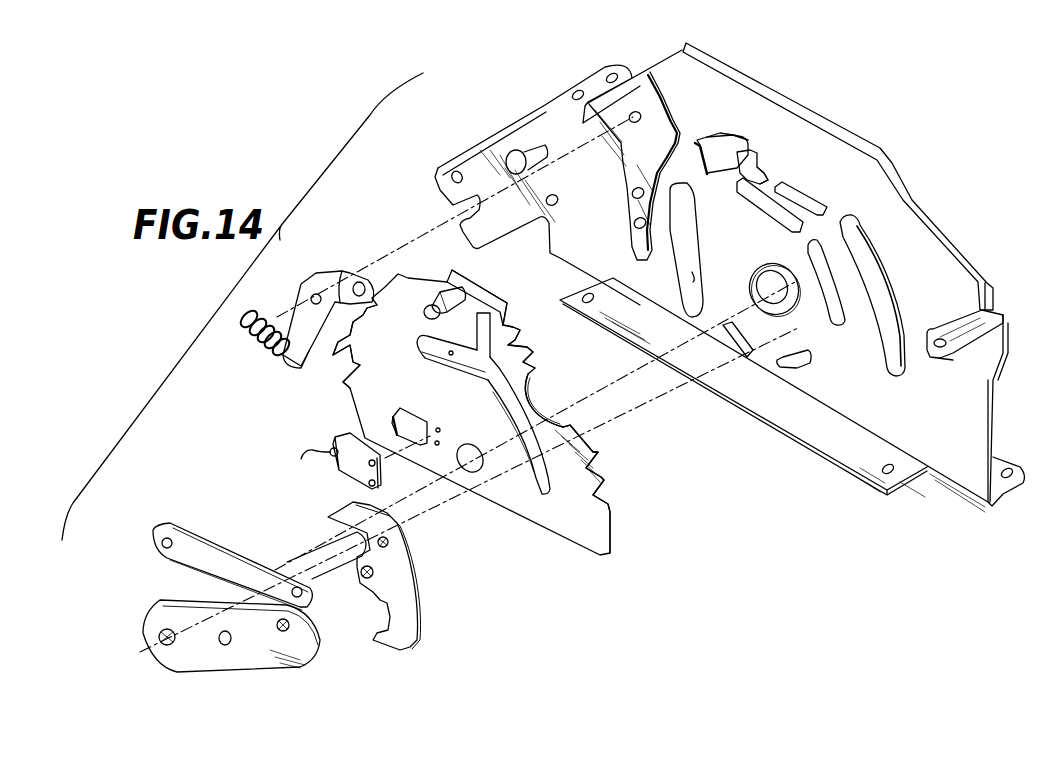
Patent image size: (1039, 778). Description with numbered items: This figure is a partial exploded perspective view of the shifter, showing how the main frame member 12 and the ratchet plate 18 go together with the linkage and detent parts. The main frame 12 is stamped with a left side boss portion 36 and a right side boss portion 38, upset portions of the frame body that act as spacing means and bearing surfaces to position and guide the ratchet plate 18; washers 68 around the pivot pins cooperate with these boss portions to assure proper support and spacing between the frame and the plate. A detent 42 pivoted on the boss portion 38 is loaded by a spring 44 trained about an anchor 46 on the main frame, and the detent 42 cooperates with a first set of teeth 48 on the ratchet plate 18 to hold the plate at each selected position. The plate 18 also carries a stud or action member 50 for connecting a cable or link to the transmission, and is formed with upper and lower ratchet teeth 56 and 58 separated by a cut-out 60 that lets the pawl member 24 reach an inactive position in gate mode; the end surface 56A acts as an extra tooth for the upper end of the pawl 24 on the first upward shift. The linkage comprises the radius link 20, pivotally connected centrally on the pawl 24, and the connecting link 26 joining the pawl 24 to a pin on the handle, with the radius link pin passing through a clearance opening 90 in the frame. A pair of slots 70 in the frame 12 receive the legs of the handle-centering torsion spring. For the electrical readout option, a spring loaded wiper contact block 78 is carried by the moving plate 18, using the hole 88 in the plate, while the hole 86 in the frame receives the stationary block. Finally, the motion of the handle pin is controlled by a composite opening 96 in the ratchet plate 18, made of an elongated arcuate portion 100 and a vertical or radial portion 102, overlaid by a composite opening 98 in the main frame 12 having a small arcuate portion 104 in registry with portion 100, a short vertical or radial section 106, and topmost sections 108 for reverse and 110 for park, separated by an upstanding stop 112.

The main frame member 12 is at (802, 124).
The ratchet plate 18 is at (567, 517).
The radius link 20 is at (267, 662).
The pawl member 24 is at (407, 617).
The connecting link 26 is at (177, 558).
The left side boss portion 36 is at (880, 287).
The right side boss portion 38 is at (647, 88).
The detent 42 is at (327, 282).
The spring 44 is at (268, 338).
The anchor 46 is at (506, 152).
The first set of teeth 48 is at (333, 357).
The stud or action member 50 is at (445, 283).
The upper ratchet teeth 56 is at (530, 345).
The end surface 56A is at (508, 310).
The lower ratchet teeth 58 is at (595, 453).
The cut-out 60 is at (537, 393).
The washers 68 is at (787, 248).
The slots 70 is at (790, 360).
The spring loaded wiper contact block 78 is at (347, 430).
The hole for the stationary block 86 is at (700, 283).
The hole for the wiper block 88 is at (402, 412).
The clearance opening 90 is at (838, 335).
The composite opening in the ratchet plate 96 is at (447, 355).
The composite opening in the main frame 98 is at (730, 137).
The elongated arcuate portion 100 is at (512, 415).
The vertical or radial portion 102 is at (487, 370).
The arcuate portion 104 is at (772, 198).
The short vertical or radial section 106 is at (777, 175).
The reverse section 108 is at (757, 150).
The park section 110 is at (713, 150).
The upstanding stop 112 is at (743, 150).